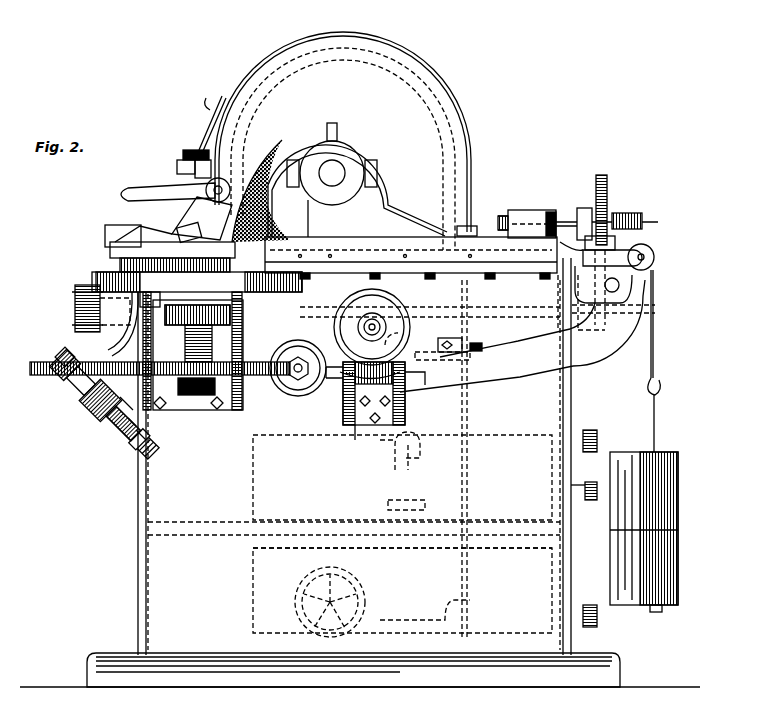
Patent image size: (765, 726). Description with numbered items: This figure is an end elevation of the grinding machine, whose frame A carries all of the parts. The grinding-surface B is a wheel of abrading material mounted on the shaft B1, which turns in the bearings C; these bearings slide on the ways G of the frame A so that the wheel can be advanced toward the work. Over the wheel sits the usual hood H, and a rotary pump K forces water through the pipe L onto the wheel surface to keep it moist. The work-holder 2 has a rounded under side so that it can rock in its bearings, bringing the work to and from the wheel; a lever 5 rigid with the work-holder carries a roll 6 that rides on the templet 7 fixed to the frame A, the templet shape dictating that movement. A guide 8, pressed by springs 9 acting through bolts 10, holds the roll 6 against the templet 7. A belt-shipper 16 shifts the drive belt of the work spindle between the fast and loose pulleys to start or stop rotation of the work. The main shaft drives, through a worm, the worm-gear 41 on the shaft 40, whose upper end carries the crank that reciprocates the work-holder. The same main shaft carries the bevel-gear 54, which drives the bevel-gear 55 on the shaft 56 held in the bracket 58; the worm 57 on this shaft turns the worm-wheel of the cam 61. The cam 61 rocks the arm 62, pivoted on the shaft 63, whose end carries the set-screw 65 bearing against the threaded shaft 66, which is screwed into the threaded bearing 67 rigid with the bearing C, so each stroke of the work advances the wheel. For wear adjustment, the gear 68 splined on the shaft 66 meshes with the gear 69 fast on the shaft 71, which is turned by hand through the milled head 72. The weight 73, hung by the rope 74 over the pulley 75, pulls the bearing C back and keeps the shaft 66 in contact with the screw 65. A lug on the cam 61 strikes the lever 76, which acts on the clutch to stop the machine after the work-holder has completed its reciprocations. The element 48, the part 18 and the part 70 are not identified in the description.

The rotary pump K is at (336, 60).
The grinding-surface B is at (270, 222).
The shaft B1 is at (336, 170).
The bearings C is at (357, 191).
The ways G is at (302, 247).
The hood H is at (287, 602).
The pipe L is at (402, 500).
The frame A is at (140, 540).
The work-holder 2 is at (165, 228).
The lever 5 is at (106, 326).
The roll 6 is at (75, 385).
The templet 7 is at (104, 404).
The guide 8 is at (58, 360).
The springs 9 is at (122, 430).
The bolts 10 is at (134, 441).
The belt-shipper 16 is at (191, 146).
The handle 18 is at (142, 189).
The shaft 40 is at (212, 345).
The worm-gear 41 is at (160, 386).
The gear 48 is at (186, 342).
The bevel-gear 54 is at (285, 386).
The bevel-gear 55 is at (345, 296).
The shaft 56 is at (338, 385).
The worm 57 is at (404, 386).
The bracket 58 is at (373, 426).
The cam 61 is at (398, 322).
The arm 62 is at (606, 370).
The shaft 63 is at (620, 286).
The set-screw 65 is at (644, 224).
The threaded shaft 66 is at (578, 214).
The threaded bearing 67 is at (530, 210).
The gear 68 is at (607, 196).
The gear 69 is at (601, 178).
The bar 70 is at (656, 306).
The shaft 71 is at (505, 308).
The milled head 72 is at (76, 296).
The weight 73 is at (676, 562).
The rope 74 is at (656, 322).
The pulley 75 is at (650, 256).
The lever 76 is at (449, 338).